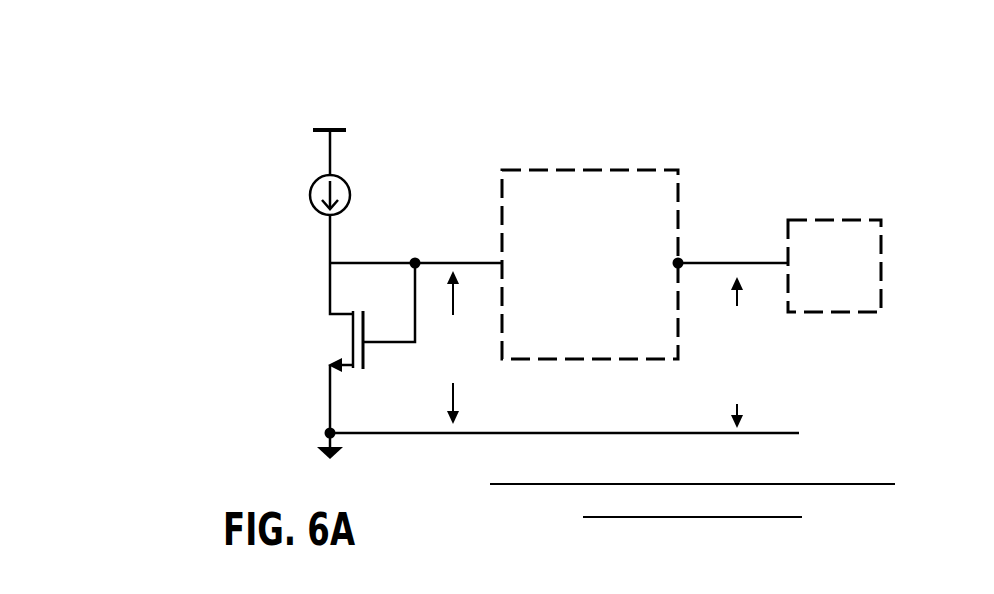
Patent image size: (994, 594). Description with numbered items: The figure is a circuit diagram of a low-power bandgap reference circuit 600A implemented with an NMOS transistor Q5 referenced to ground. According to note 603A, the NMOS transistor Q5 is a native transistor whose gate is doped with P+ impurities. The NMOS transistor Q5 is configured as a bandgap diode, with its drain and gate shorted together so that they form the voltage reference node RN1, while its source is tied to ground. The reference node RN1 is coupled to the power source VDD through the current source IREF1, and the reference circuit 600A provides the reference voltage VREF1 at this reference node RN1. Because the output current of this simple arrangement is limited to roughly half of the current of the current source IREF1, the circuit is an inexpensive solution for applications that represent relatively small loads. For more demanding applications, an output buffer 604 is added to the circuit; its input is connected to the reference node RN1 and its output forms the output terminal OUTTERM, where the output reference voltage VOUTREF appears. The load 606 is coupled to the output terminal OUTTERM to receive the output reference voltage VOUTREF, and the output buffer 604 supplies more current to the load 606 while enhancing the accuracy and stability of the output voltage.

The low-power bandgap reference circuit 600A is at (268, 46).
The note 603A is at (305, 335).
The output buffer 604 is at (590, 264).
The load 606 is at (834, 266).
The NMOS transistor Q5 is at (366, 348).
The reference node RN1 is at (421, 251).
The output terminal OUTTERM is at (695, 250).
The current source IREF1 is at (361, 219).
The power source VDD is at (330, 138).
The reference voltage VREF1 is at (452, 347).
The output reference voltage VOUTREF is at (736, 352).